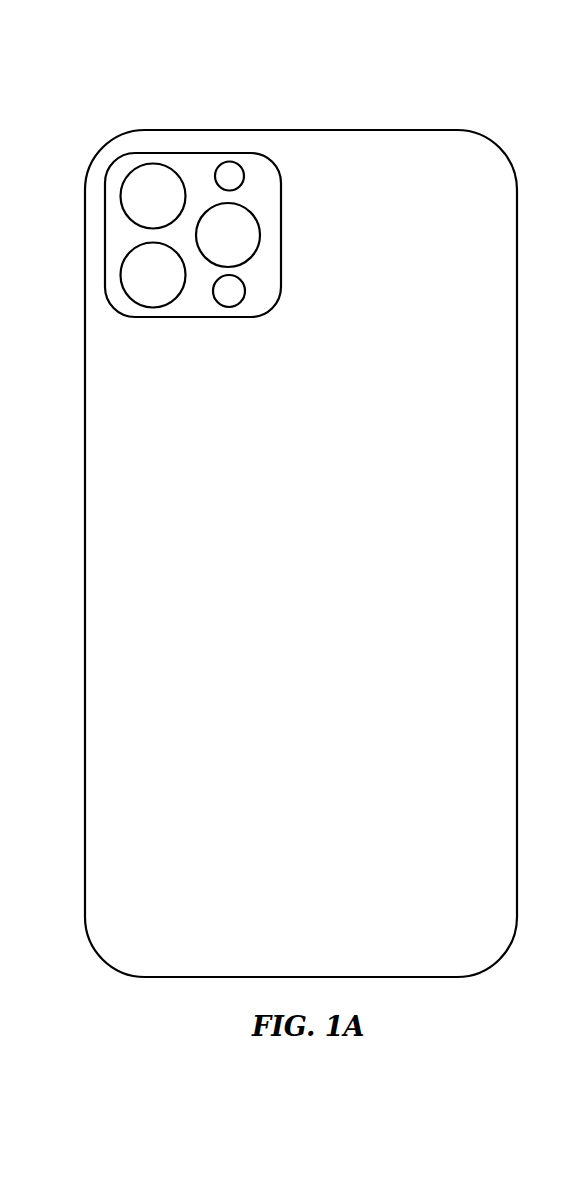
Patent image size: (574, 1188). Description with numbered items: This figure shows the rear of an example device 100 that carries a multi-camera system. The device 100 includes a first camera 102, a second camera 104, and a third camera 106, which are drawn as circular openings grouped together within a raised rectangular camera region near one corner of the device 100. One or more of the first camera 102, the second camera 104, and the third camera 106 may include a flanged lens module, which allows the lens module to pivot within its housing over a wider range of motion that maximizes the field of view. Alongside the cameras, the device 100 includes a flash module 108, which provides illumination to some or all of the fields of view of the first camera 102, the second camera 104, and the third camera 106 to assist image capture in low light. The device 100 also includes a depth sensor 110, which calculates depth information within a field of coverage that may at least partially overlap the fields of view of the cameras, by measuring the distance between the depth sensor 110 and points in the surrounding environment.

The device 100 is at (489, 66).
The first camera 102 is at (122, 257).
The second camera 104 is at (122, 177).
The third camera 106 is at (206, 209).
The flash module 108 is at (237, 163).
The depth sensor 110 is at (226, 308).